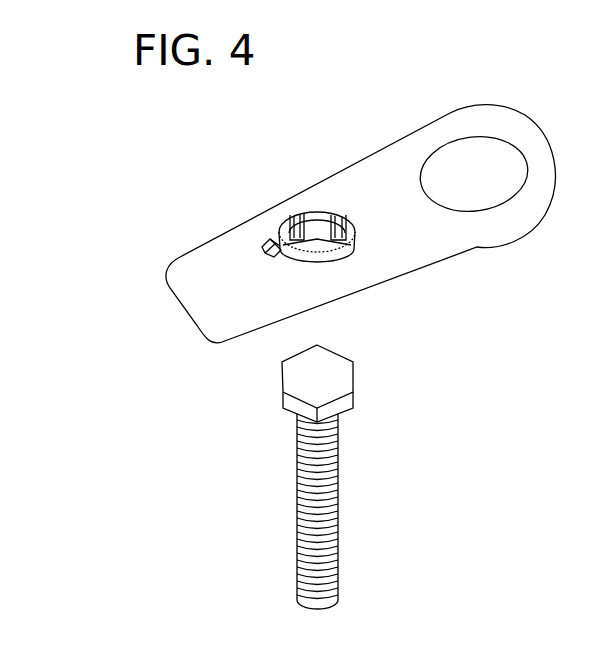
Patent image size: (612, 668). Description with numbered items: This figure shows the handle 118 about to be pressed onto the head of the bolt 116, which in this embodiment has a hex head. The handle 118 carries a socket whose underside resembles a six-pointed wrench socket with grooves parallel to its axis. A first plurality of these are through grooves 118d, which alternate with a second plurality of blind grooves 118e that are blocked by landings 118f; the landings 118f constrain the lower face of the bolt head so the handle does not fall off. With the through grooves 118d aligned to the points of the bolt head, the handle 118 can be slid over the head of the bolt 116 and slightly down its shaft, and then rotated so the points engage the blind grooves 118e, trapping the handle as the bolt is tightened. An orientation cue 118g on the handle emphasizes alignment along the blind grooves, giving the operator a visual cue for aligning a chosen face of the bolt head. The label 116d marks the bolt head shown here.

The bolt 116 is at (305, 477).
The bolt head 116d is at (297, 405).
The handle 118 is at (447, 260).
The through grooves 118d is at (348, 210).
The blind grooves 118e is at (343, 212).
The landings 118f is at (305, 213).
The orientation cue 118g is at (275, 248).